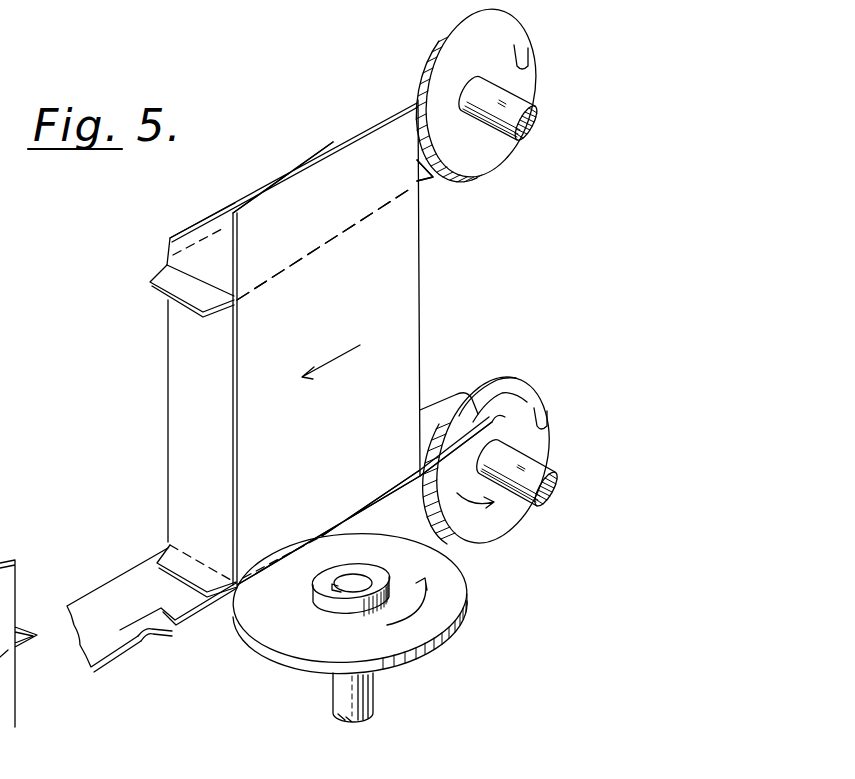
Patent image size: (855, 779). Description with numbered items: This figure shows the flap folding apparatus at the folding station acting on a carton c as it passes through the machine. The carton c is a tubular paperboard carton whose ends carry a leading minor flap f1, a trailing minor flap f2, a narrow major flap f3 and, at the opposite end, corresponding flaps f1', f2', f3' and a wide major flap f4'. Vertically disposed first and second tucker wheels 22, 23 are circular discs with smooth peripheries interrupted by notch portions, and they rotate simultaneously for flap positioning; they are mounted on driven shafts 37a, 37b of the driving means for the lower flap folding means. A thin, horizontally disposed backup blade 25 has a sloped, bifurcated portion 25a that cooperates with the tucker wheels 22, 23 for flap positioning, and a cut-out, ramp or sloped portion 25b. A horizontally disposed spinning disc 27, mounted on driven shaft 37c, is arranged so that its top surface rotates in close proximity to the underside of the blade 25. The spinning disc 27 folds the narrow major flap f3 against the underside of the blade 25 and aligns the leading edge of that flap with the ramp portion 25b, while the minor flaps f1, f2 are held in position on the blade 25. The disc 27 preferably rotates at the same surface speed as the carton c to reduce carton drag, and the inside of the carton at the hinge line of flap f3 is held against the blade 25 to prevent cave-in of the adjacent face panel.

The first tucker wheel 22 is at (433, 53).
The second tucker wheel 23 is at (504, 376).
The backup blade 25 is at (121, 591).
The sloped, bifurcated portion of the backup blade 25a is at (471, 363).
The ramp or sloped portion of the blade 25b is at (238, 667).
The spinning disc 27 is at (462, 622).
The driven shaft 37a is at (545, 181).
The driven shaft 37b is at (526, 510).
The driven shaft 37c is at (444, 715).
The carton c is at (346, 425).
The leading minor flap f1 is at (173, 541).
The leading minor flap f1' is at (176, 296).
The trailing minor flap f2 is at (462, 434).
The trailing minor flap f2' is at (445, 192).
The narrow major flap f3 is at (364, 501).
The narrow major flap f3' is at (245, 190).
The wide major flap f4' is at (325, 243).